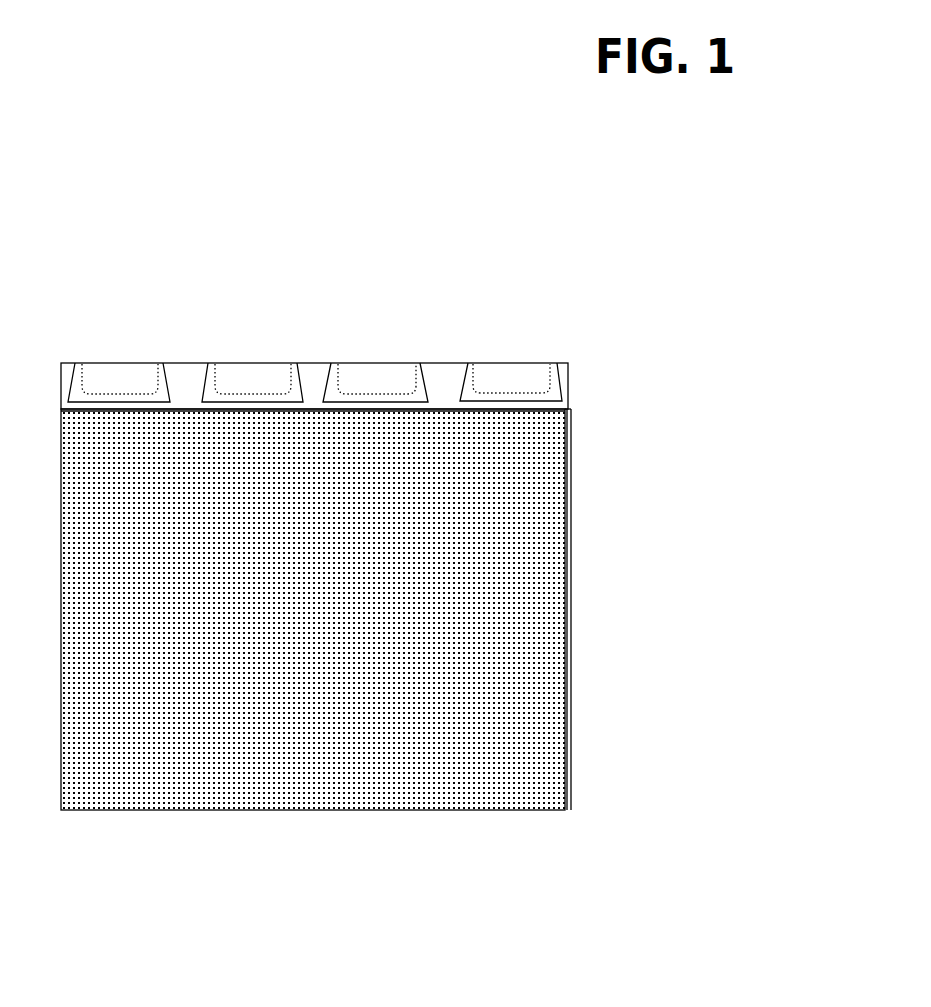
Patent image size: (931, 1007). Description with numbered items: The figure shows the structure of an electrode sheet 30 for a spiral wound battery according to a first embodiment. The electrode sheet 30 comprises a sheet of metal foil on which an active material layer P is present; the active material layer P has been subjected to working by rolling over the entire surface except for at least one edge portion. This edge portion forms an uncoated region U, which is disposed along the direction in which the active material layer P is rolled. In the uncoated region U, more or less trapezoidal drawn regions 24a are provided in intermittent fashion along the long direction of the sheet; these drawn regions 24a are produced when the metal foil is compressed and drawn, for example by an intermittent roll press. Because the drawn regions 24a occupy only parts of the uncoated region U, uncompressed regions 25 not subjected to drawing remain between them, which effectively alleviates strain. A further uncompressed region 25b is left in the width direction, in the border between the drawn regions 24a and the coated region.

The uncoated region U is at (568, 378).
The active material layer P is at (558, 531).
The uncompressed region 25 is at (317, 383).
The drawn region 24a is at (498, 370).
The uncompressed region 25b is at (528, 404).
The electrode sheet 30 is at (547, 933).